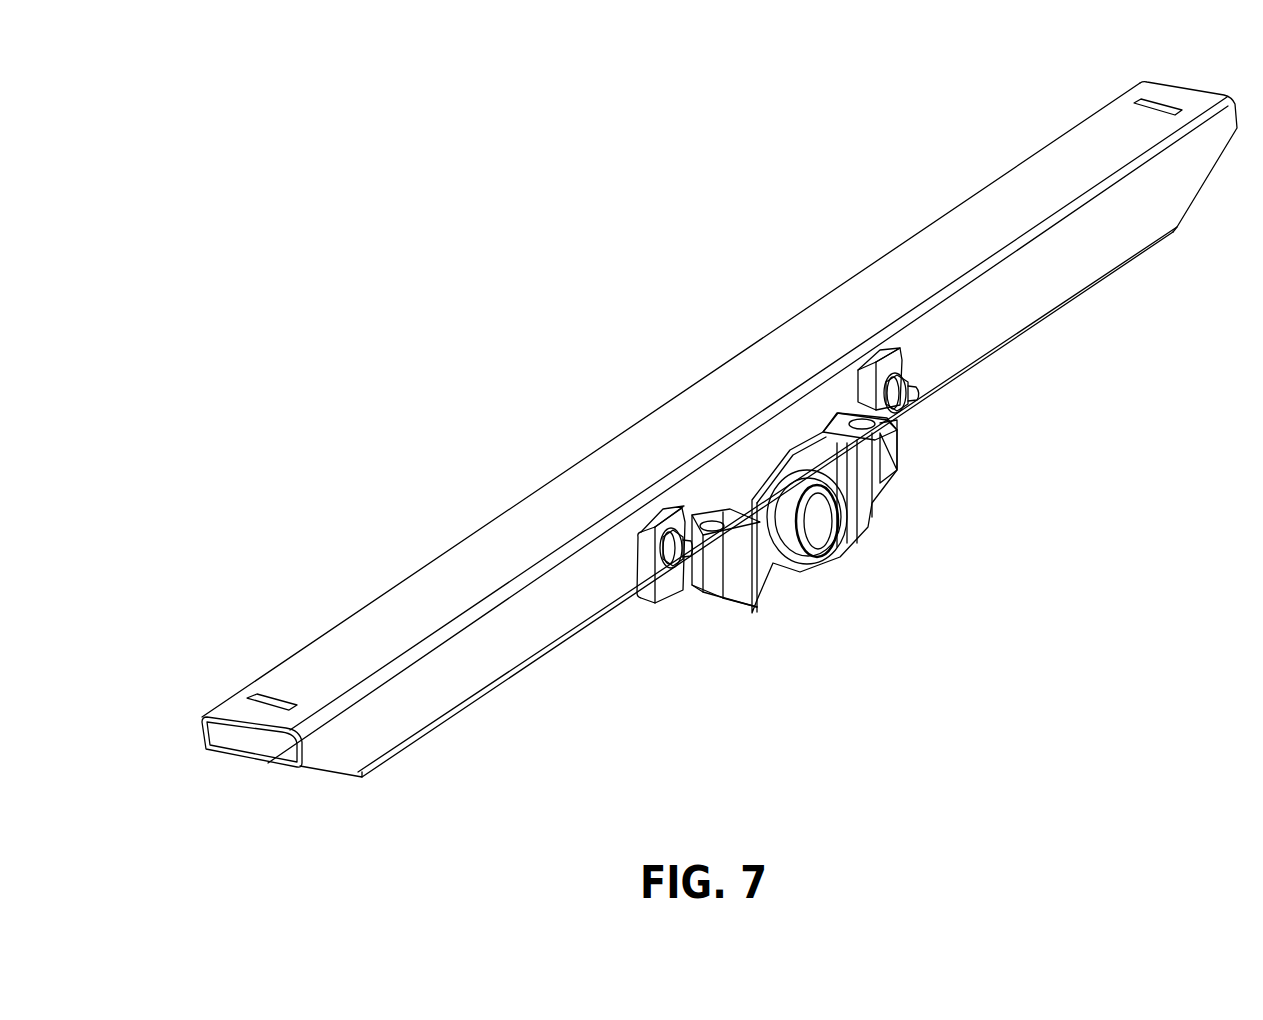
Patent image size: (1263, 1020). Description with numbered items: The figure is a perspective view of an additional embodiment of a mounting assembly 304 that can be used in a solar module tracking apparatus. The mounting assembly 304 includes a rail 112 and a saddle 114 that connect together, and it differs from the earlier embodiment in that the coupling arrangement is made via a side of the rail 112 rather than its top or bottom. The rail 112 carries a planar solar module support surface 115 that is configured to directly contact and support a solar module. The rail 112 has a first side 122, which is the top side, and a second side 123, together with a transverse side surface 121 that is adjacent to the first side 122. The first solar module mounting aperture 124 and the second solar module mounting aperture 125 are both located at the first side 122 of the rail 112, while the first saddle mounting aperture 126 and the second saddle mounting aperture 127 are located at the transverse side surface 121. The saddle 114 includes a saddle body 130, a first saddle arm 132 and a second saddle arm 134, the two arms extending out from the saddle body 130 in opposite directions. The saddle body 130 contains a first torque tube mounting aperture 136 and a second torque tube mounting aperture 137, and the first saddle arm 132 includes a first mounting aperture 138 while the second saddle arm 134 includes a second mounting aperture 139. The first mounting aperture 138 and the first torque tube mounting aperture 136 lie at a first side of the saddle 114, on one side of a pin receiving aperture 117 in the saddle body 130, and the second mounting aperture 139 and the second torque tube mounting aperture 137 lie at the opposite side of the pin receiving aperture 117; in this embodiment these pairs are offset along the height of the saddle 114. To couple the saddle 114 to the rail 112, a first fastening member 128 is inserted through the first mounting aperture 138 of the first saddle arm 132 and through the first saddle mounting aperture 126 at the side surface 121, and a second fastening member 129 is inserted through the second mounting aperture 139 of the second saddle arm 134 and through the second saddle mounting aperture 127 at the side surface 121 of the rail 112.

The mounting assembly 304 is at (717, 242).
The rail 112 is at (719, 418).
The solar module support surface 115 is at (1030, 207).
The transverse side surface 121 is at (507, 647).
The first side 122 is at (478, 560).
The second side 123 is at (425, 742).
The first solar module mounting aperture 124 is at (1176, 103).
The second solar module mounting aperture 125 is at (276, 697).
The first saddle mounting aperture 126 is at (850, 384).
The second saddle mounting aperture 127 is at (649, 505).
The first fastening member 128 is at (925, 404).
The second fastening member 129 is at (688, 572).
The saddle body 130 is at (820, 522).
The first saddle arm 132 is at (920, 430).
The second saddle arm 134 is at (674, 606).
The first torque tube mounting aperture 136 is at (875, 436).
The second torque tube mounting aperture 137 is at (733, 537).
The first mounting aperture 138 is at (910, 353).
The second mounting aperture 139 is at (638, 535).
The saddle 114 is at (835, 555).
The pin receiving aperture 117 is at (830, 558).